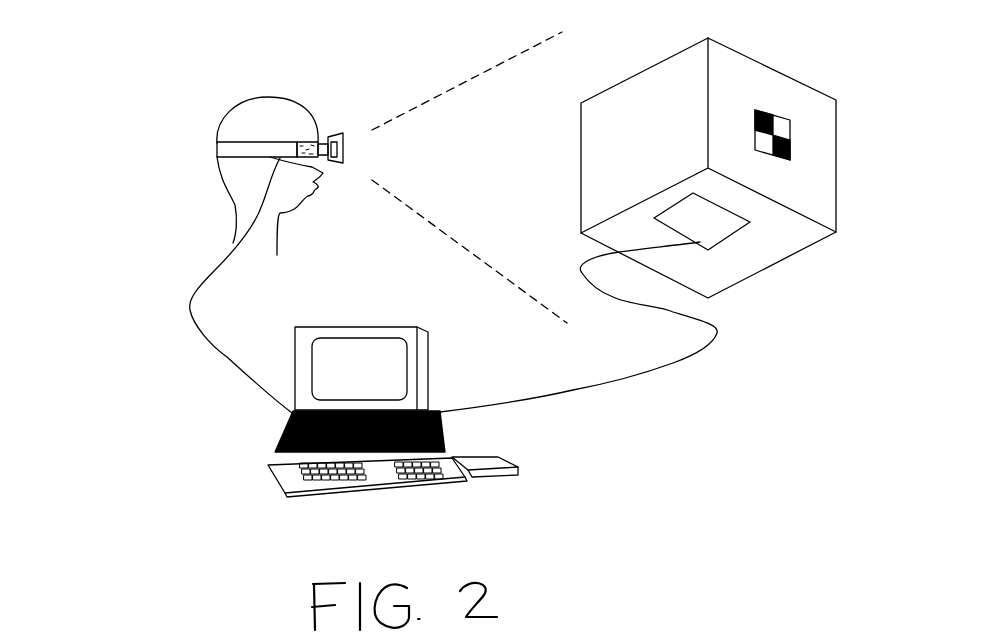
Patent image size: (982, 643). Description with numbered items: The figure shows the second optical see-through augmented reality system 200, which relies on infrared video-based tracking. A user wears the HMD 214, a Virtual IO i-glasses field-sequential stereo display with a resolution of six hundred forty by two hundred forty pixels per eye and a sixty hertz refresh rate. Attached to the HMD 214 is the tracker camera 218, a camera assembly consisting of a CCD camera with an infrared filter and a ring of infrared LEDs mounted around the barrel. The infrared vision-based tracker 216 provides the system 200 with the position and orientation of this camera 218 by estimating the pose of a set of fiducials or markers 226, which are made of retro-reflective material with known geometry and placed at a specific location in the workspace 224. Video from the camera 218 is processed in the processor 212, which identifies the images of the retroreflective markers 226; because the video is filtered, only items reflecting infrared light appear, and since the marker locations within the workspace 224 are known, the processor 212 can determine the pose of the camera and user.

The second optical see-through system 200 is at (116, 94).
The processor 212 is at (275, 430).
The HMD 214 is at (350, 125).
The infrared vision-based tracker 216 is at (197, 282).
The tracker camera 218 is at (292, 127).
The workspace 224 is at (752, 62).
The markers 226 is at (789, 135).